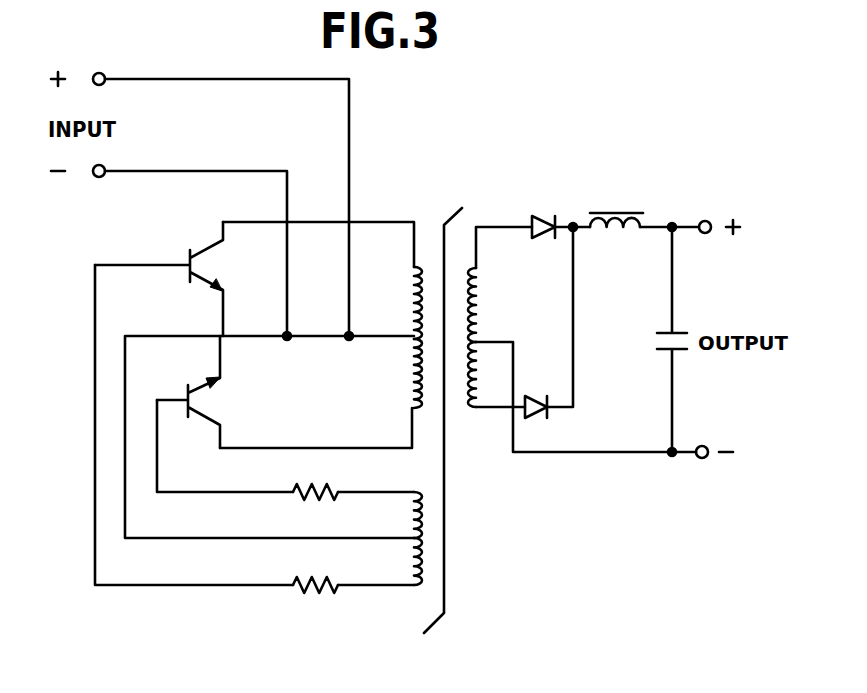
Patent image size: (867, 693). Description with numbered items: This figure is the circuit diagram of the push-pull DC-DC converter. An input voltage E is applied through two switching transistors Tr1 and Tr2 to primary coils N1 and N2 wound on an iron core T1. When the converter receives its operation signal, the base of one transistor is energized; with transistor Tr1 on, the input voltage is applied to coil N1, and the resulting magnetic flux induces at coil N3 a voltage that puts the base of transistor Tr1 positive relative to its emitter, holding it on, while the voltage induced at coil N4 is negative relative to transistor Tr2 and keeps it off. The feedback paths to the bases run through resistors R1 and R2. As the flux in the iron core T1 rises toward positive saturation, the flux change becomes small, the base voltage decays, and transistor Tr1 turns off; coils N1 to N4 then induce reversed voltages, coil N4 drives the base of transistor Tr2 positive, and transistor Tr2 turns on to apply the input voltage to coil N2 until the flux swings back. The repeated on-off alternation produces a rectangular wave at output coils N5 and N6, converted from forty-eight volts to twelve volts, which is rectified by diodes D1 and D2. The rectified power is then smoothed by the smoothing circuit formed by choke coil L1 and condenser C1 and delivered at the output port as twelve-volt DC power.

The transistor Tr1 is at (180, 279).
The transistor Tr2 is at (211, 392).
The iron core T1 is at (449, 408).
The coil N1 is at (399, 303).
The coil N2 is at (398, 373).
The coil N3 is at (398, 561).
The coil N4 is at (398, 515).
The output coil N5 is at (491, 305).
The output coil N6 is at (490, 374).
The base resistor R1 is at (315, 479).
The base resistor R2 is at (315, 602).
The diode D1 is at (545, 210).
The rectifier diode D2 is at (542, 390).
The choke coil L1 is at (616, 204).
The condenser C1 is at (654, 339).